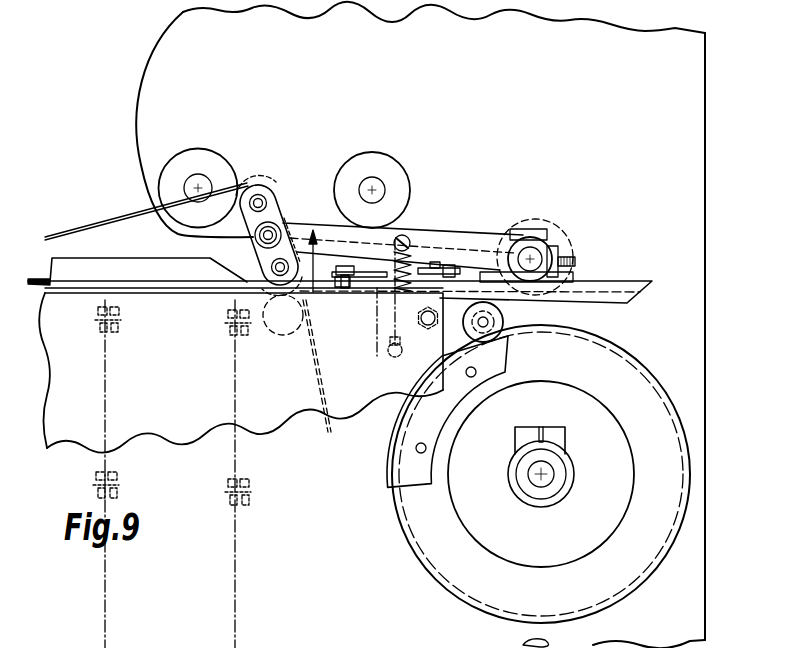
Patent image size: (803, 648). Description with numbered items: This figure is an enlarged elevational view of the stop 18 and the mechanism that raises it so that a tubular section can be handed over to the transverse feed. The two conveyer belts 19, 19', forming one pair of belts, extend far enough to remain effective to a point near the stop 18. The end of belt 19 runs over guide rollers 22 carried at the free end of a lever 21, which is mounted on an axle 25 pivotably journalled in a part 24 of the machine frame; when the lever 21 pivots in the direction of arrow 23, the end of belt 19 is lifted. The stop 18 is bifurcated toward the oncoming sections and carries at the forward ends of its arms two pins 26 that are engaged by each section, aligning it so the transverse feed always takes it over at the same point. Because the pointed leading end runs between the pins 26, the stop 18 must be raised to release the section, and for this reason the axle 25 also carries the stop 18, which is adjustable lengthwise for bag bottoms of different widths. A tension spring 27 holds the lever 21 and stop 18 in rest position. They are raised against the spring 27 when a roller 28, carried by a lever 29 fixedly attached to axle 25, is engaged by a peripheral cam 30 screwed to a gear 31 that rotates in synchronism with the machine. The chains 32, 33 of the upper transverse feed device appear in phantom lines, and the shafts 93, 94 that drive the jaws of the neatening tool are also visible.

The stop 18 is at (241, 444).
The conveyer belt 19 is at (146, 195).
The conveyer belt 19' is at (290, 378).
The lever 21 is at (460, 250).
The guide rollers 22 is at (258, 192).
The arrow 23 is at (313, 292).
The part of the machine frame 24 is at (168, 77).
The axle 25 is at (532, 258).
The pins 26 is at (347, 280).
The tension spring 27 is at (404, 277).
The roller 28 is at (503, 328).
The lever 29 is at (603, 312).
The peripheral cam 30 is at (408, 462).
The gear 31 is at (442, 537).
The chain 32 is at (114, 483).
The chain 33 is at (244, 486).
The shaft 93 is at (375, 185).
The shaft 94 is at (202, 180).